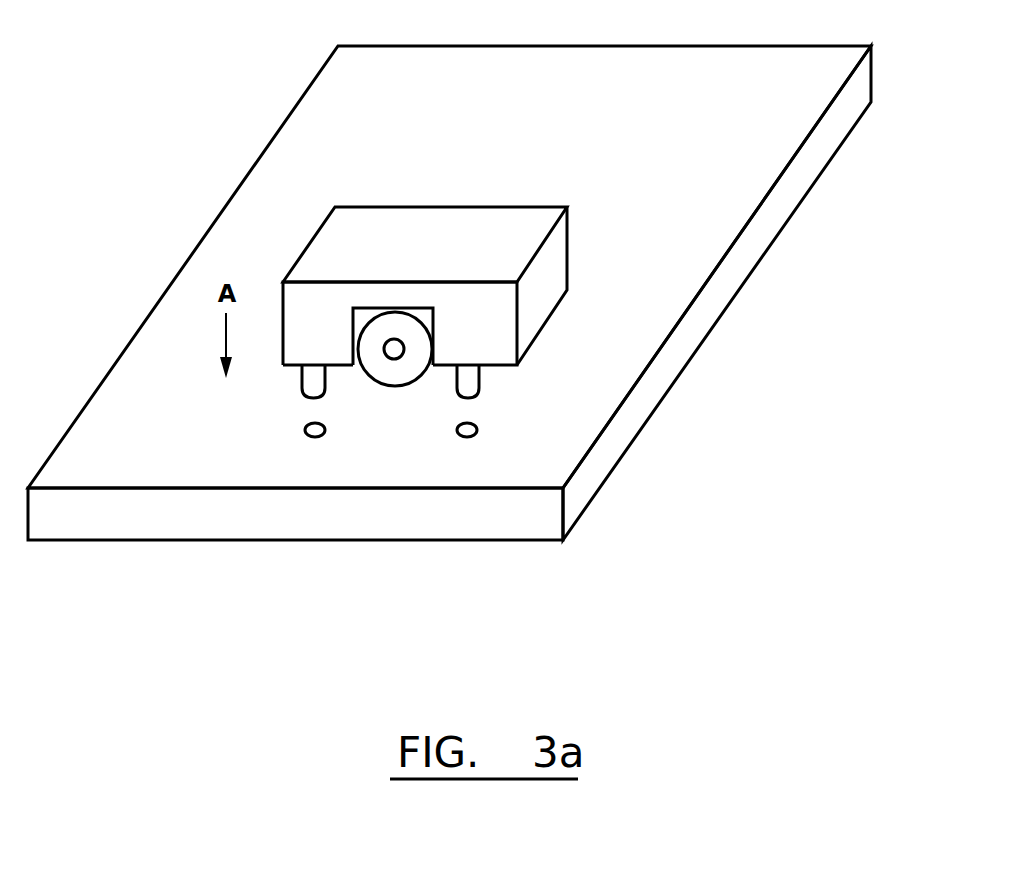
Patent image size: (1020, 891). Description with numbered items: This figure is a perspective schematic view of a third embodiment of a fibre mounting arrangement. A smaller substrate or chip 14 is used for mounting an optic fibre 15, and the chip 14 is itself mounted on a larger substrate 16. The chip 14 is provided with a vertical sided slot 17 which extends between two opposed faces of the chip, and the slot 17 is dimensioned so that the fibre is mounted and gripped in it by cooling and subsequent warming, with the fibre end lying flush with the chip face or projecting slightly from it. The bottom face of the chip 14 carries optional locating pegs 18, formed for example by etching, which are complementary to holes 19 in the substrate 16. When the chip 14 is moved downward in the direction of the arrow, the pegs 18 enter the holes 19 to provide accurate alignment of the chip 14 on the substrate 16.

The chip 14 is at (437, 255).
The optic fibre 15 is at (395, 377).
The substrate 16 is at (580, 135).
The slot 17 is at (446, 337).
The locating pegs 18 is at (303, 387).
The holes 19 is at (310, 437).